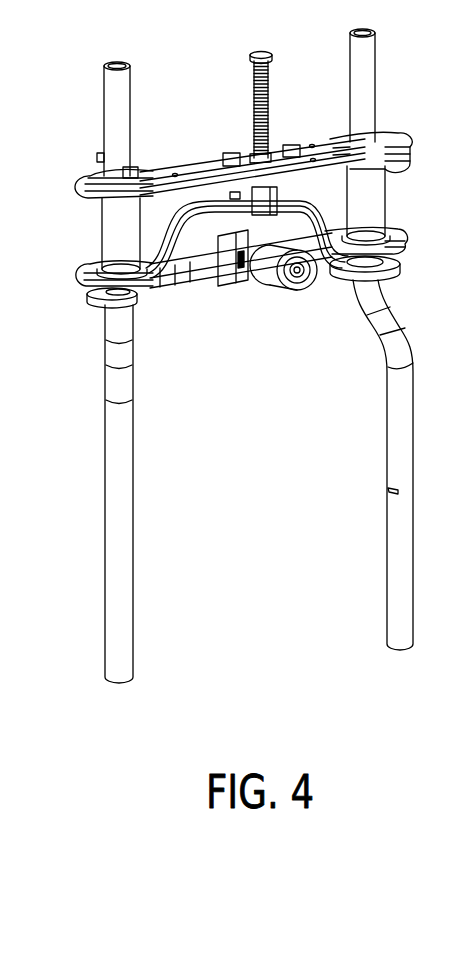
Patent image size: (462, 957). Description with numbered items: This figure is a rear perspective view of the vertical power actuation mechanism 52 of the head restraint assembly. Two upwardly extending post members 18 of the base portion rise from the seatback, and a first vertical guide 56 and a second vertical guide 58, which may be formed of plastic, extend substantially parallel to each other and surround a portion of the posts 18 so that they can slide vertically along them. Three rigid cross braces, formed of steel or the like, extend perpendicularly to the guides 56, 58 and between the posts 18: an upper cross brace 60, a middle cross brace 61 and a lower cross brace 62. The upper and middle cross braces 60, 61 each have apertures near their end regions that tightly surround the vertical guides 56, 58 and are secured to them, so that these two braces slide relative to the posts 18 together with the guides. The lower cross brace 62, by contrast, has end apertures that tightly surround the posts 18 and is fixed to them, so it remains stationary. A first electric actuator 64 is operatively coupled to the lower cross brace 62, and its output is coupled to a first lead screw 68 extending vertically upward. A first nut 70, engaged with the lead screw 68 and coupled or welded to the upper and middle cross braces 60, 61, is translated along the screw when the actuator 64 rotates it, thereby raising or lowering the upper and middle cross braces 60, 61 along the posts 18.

The post member 18 is at (112, 513).
The vertical power actuation mechanism 52 is at (79, 320).
The first vertical guide 56 is at (112, 224).
The second vertical guide 58 is at (367, 200).
The upper cross brace 60 is at (167, 170).
The middle cross brace 61 is at (201, 290).
The lower cross brace 62 is at (166, 300).
The first electric actuator 64 is at (262, 278).
The first lead screw 68 is at (268, 82).
The first nut 70 is at (264, 200).